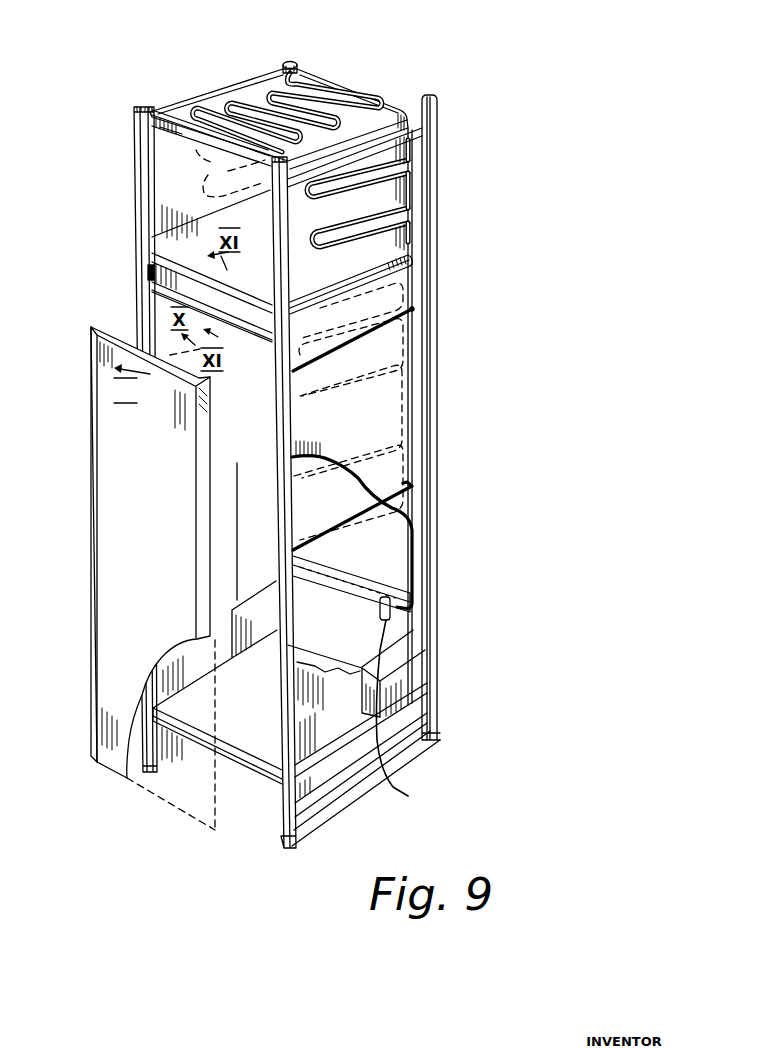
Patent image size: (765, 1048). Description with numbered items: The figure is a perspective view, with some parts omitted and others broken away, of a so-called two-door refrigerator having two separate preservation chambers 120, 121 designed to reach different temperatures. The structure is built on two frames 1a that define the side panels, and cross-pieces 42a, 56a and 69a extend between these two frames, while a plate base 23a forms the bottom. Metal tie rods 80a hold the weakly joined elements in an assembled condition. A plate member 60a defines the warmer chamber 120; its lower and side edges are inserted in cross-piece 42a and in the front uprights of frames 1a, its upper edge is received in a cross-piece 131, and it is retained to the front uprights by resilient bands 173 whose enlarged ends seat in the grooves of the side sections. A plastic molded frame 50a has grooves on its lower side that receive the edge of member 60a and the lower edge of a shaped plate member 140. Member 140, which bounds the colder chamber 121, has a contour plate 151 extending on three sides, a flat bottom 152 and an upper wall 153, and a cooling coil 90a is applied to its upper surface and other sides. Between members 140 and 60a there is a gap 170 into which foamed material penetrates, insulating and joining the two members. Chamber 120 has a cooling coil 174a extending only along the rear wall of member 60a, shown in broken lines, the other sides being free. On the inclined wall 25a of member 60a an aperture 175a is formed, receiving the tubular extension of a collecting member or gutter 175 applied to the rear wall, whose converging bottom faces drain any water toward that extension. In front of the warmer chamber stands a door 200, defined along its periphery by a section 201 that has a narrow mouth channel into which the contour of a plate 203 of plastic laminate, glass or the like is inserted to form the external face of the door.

The frames 1a is at (450, 198).
The tie rods 80a is at (219, 97).
The upper wall 153 is at (293, 105).
The coil 90a is at (341, 86).
The shaped plate member 140 is at (390, 93).
The contour plate 151 is at (408, 236).
The gap 170 is at (384, 275).
The plate member 60a is at (418, 348).
The cooling coil 174a is at (395, 422).
The bands 173 is at (458, 468).
The collecting member or gutter 175 is at (374, 571).
The aperture 175a is at (426, 705).
The cross-piece 69a is at (390, 630).
The plate base 23a is at (414, 706).
The cross-piece 56a is at (180, 139).
The preservation chamber 121 is at (183, 193).
The plastic molded frame 50a is at (152, 236).
The cross-piece 131 is at (138, 273).
The bottom 152 is at (258, 282).
The preservation chamber 120 is at (236, 469).
The inclined wall 25a is at (252, 603).
The cross-piece 42a is at (252, 765).
The door 200 is at (115, 578).
The section 201 is at (92, 500).
The plate 203 is at (118, 561).